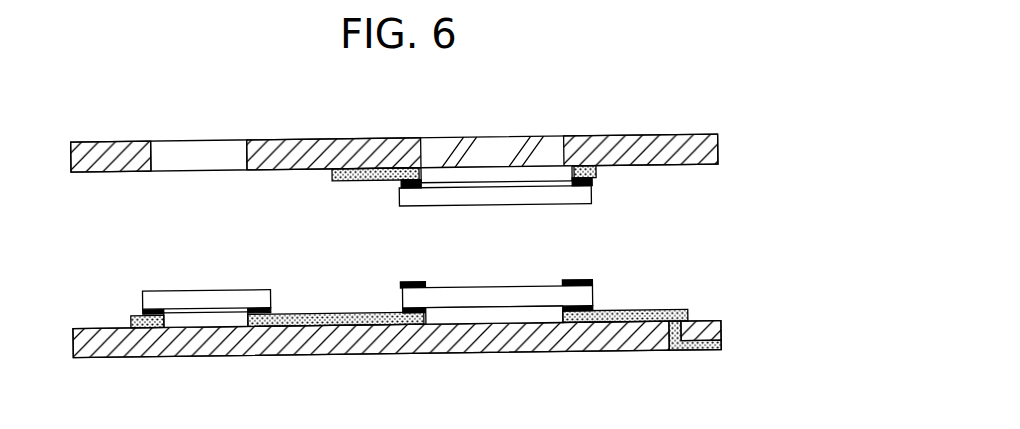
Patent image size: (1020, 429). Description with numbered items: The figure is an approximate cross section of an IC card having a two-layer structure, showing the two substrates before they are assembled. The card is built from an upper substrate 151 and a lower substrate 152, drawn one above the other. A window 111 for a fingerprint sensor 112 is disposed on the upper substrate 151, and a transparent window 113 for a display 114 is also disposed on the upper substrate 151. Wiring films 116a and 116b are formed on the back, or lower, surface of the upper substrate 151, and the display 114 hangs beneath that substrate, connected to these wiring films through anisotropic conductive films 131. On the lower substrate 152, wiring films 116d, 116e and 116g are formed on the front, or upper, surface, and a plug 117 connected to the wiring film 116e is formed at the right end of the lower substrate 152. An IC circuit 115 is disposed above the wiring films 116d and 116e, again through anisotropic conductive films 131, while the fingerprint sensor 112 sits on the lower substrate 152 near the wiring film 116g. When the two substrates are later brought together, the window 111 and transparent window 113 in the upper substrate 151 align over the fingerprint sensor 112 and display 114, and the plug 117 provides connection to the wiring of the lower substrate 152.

The window 111 is at (155, 164).
The fingerprint sensor 112 is at (231, 290).
The transparent window 113 is at (504, 138).
The display 114 is at (568, 206).
The IC circuit 115 is at (541, 285).
The wiring film 116a is at (350, 183).
The wiring film 116b is at (597, 172).
The wiring film 116d is at (345, 313).
The wiring film 116e is at (690, 315).
The wiring film 116g is at (130, 322).
The plug 117 is at (681, 350).
The anisotropic conductive film 131 is at (597, 183).
The upper substrate 151 is at (658, 133).
The lower substrate 152 is at (541, 355).